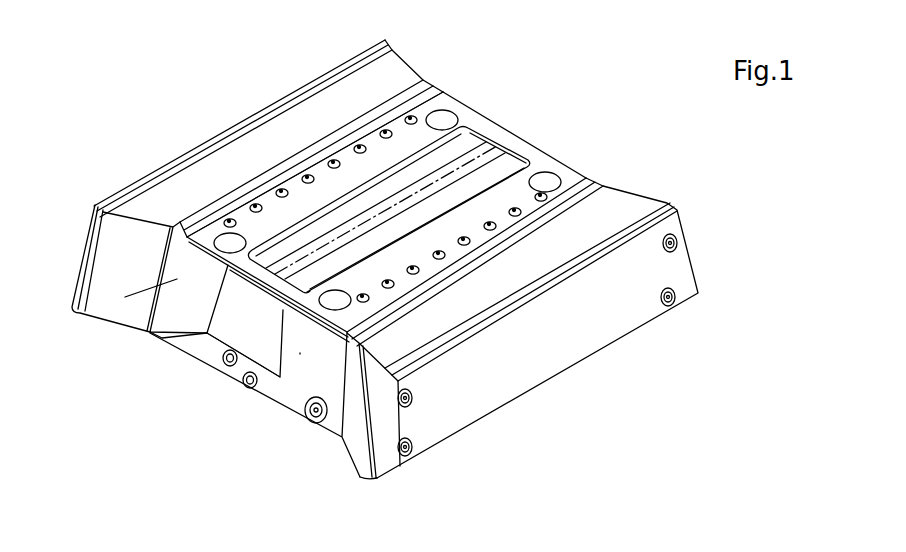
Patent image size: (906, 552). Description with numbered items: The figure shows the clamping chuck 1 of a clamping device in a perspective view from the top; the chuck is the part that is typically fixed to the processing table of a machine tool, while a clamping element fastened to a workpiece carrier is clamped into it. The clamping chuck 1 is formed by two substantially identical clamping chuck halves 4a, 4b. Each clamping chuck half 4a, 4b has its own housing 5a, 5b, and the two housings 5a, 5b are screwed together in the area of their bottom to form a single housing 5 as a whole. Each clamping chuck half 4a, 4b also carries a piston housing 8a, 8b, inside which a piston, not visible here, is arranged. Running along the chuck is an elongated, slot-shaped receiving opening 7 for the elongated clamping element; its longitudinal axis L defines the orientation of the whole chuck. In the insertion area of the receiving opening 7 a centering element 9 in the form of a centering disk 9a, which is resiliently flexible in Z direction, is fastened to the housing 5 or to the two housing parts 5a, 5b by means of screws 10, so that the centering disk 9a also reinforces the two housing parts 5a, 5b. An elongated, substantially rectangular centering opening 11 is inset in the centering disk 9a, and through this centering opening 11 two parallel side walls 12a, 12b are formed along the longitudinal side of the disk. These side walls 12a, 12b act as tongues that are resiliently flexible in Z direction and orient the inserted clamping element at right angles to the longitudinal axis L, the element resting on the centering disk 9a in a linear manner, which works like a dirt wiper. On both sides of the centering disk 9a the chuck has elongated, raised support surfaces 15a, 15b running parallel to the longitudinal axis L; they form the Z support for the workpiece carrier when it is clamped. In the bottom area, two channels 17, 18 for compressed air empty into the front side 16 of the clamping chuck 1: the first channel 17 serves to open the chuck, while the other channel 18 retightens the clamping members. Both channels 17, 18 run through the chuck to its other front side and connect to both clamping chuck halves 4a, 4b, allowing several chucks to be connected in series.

The clamping chuck 1 is at (624, 83).
The clamping chuck half 4a is at (678, 195).
The clamping chuck half 4b is at (410, 45).
The housing 5 is at (287, 397).
The housing 5a is at (300, 353).
The housing 5b is at (125, 297).
The receiving opening 7 is at (222, 340).
The piston housing 8a is at (366, 418).
The piston housing 8b is at (114, 272).
The centering element 9 is at (320, 175).
The centering disk 9a is at (547, 165).
The screws 10 is at (257, 203).
The centering opening 11 is at (470, 135).
The side wall 12a is at (403, 221).
The side wall 12b is at (235, 288).
The support surface 15a is at (592, 181).
The support surface 15b is at (428, 88).
The front side 16 is at (173, 330).
The first channel 17 is at (228, 366).
The channel 18 is at (249, 390).
The longitudinal axis L is at (499, 146).